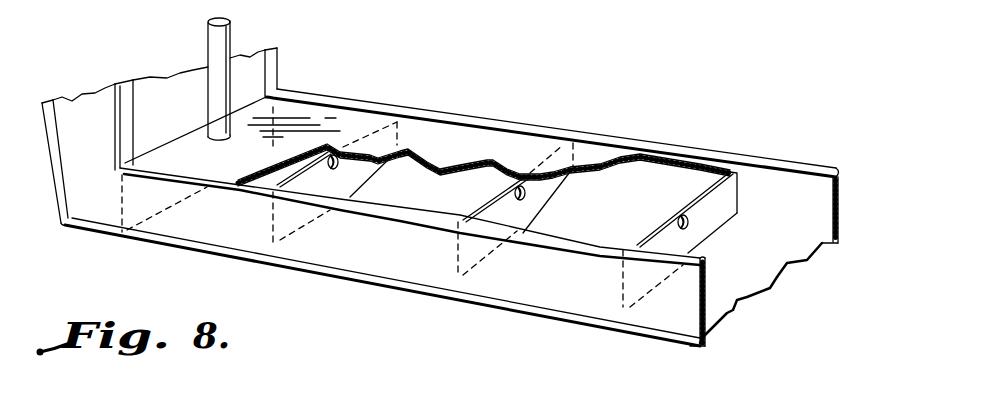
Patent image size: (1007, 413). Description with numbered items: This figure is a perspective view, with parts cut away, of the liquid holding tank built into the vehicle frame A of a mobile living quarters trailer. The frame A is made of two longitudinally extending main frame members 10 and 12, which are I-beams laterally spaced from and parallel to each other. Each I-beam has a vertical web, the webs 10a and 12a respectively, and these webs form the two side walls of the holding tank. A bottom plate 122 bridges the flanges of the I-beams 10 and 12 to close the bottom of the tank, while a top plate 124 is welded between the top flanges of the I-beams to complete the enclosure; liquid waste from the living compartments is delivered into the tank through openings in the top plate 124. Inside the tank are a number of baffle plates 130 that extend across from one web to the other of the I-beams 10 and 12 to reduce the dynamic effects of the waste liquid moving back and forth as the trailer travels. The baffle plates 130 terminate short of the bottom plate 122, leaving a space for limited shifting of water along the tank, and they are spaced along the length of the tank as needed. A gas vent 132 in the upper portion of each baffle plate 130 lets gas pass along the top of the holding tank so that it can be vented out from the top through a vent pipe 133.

The main frame member 10 is at (643, 143).
The vertical web 10a is at (818, 211).
The main frame member 12 is at (580, 292).
The vertical web 12a is at (677, 315).
The vehicle frame A is at (420, 272).
The bottom plate 122 is at (763, 293).
The top plate 124 is at (474, 138).
The baffle plate 130 is at (723, 193).
The gas vent 132 is at (683, 216).
The vent pipe 133 is at (232, 42).